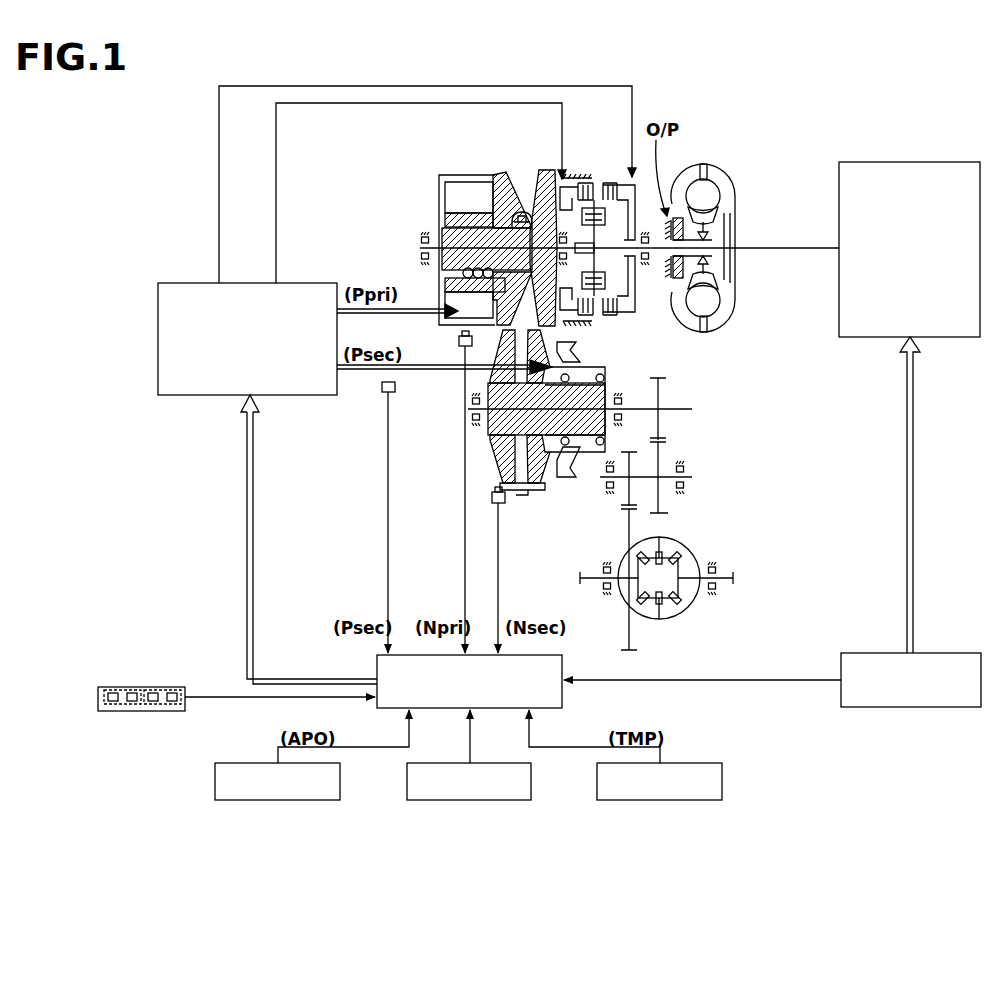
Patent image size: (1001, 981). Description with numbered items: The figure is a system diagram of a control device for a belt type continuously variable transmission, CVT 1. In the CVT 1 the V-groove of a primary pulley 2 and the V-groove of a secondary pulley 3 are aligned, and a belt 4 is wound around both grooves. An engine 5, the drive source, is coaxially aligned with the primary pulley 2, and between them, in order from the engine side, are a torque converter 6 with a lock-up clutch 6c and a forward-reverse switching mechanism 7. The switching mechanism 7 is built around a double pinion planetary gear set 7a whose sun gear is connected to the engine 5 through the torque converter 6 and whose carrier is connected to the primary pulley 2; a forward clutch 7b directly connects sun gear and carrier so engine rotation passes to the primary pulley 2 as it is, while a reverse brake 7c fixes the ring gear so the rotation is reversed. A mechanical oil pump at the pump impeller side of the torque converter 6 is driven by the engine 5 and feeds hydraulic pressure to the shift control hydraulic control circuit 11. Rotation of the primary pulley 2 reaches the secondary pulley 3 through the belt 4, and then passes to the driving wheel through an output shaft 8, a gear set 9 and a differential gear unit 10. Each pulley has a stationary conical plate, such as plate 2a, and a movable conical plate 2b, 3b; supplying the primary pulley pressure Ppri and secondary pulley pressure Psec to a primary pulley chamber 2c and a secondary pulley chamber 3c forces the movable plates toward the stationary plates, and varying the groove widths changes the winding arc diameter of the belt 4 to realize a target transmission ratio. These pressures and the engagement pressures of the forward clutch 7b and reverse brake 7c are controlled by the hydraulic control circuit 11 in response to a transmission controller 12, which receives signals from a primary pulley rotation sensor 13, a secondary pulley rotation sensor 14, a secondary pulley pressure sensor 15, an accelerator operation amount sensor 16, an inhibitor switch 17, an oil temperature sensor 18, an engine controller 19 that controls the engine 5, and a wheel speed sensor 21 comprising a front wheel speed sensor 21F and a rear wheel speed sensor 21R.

The belt type continuously variable transmission 1 is at (473, 214).
The primary pulley 2 is at (505, 214).
The stationary conical plate 2a is at (536, 174).
The movable conical plate 2b is at (500, 175).
The primary pulley chamber 2c is at (460, 195).
The secondary pulley 3 is at (547, 444).
The movable conical plate 3b is at (535, 486).
The secondary pulley chamber 3c is at (555, 472).
The belt 4 is at (521, 213).
The engine 5 is at (920, 162).
The torque converter 6 is at (732, 211).
The lock-up clutch 6c is at (732, 236).
The forward-reverse switching mechanism 7 is at (604, 207).
The double pinion planetary gear set 7a is at (612, 201).
The forward clutch 7b is at (612, 186).
The reverse brake 7c is at (590, 183).
The output shaft 8 is at (640, 404).
The gear set 9 is at (686, 498).
The differential gear unit 10 is at (692, 548).
The shift control hydraulic control circuit 11 is at (185, 283).
The transmission controller 12 is at (377, 668).
The primary pulley rotation sensor 13 is at (459, 342).
The secondary pulley rotation sensor 14 is at (500, 508).
The secondary pulley pressure sensor 15 is at (386, 392).
The accelerator operation amount sensor 16 is at (228, 763).
The inhibitor switch 17 is at (407, 783).
The oil temperature sensor 18 is at (711, 763).
The engine controller 19 is at (947, 653).
The wheel speed sensor 21 is at (135, 702).
The wheel speed sensor for front wheel 21F is at (115, 690).
The wheel speed sensor for rear wheel 21R is at (156, 690).